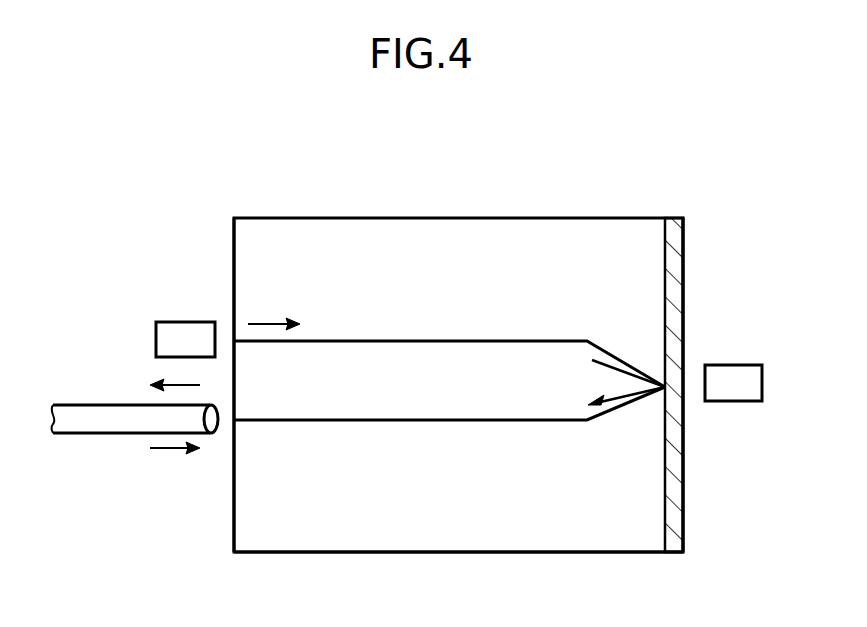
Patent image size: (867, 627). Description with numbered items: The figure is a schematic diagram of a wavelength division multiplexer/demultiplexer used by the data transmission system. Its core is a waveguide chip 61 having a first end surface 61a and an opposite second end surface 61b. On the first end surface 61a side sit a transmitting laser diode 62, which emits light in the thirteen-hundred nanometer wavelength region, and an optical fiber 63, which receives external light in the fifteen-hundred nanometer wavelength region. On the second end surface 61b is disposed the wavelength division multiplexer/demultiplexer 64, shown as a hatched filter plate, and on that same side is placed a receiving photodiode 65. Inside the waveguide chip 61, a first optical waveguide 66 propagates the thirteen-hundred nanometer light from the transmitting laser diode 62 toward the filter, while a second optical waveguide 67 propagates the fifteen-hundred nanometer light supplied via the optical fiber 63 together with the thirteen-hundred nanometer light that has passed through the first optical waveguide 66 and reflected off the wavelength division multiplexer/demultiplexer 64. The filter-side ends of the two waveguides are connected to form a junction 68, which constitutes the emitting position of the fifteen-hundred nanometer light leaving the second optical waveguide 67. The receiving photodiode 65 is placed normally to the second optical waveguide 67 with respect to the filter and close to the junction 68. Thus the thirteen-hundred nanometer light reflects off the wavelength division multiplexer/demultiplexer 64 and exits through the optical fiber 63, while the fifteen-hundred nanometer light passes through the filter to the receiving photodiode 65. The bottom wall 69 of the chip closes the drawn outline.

The waveguide chip 61 is at (514, 217).
The first end surface 61a is at (232, 222).
The second end surface 61b is at (686, 225).
The transmitting laser diode 62 is at (184, 321).
The optical fiber 63 is at (93, 434).
The wavelength division multiplexer/demultiplexer 64 is at (676, 291).
The receiving photodiode 65 is at (733, 402).
The first optical waveguide 66 is at (409, 340).
The second optical waveguide 67 is at (407, 423).
The junction 68 is at (662, 382).
The bottom wall of chamber 69 is at (508, 553).